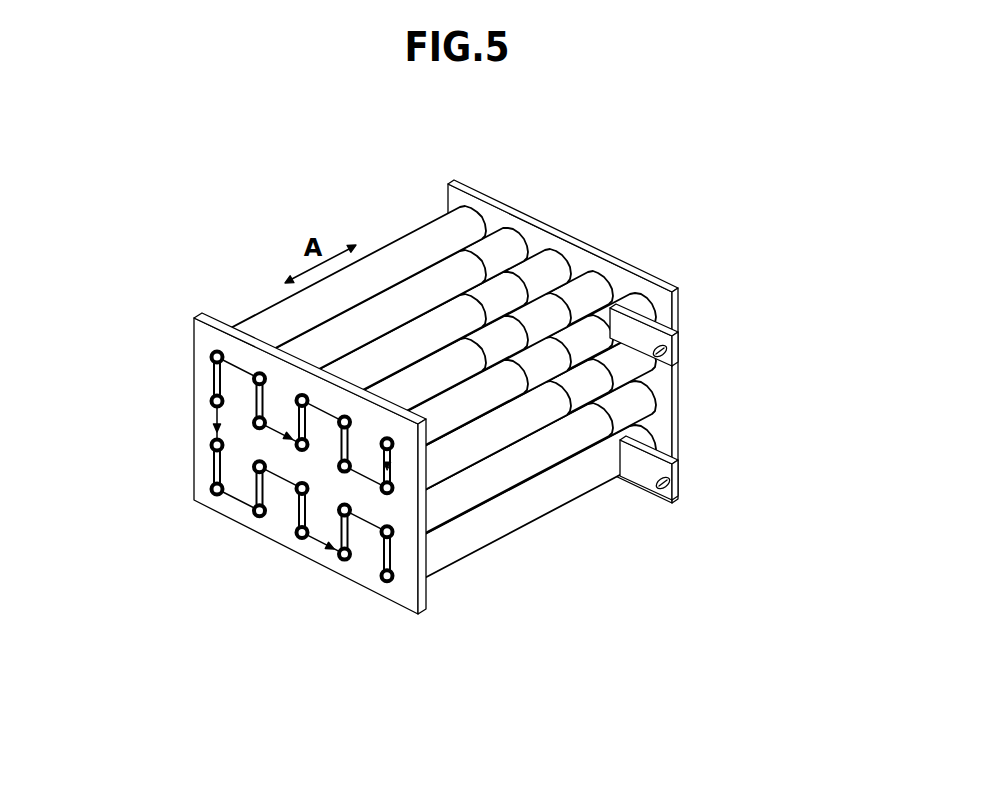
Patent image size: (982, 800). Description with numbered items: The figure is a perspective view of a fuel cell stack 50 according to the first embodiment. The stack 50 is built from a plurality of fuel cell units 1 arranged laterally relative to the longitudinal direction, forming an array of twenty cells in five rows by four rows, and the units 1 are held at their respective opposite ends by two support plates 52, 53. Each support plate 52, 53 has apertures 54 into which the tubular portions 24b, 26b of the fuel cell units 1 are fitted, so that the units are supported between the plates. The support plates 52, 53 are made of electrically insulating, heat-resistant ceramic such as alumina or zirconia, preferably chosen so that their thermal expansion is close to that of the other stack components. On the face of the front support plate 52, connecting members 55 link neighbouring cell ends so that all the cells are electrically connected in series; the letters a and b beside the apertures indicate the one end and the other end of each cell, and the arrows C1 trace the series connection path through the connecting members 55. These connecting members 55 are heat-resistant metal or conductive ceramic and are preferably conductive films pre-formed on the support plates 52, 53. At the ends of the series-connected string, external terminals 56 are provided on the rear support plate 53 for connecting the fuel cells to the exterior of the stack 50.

The fuel cell unit 1 is at (405, 253).
The fuel cell stack 50 is at (469, 398).
The support plate 52 is at (340, 467).
The support plate 53 is at (463, 181).
The aperture 54 is at (262, 518).
The connecting member 55 is at (205, 381).
The external terminal 56 is at (650, 333).
The tubular portion 24b is at (399, 584).
The tubular portion 26b is at (398, 535).
The arrow indicating series connection C1 is at (410, 556).